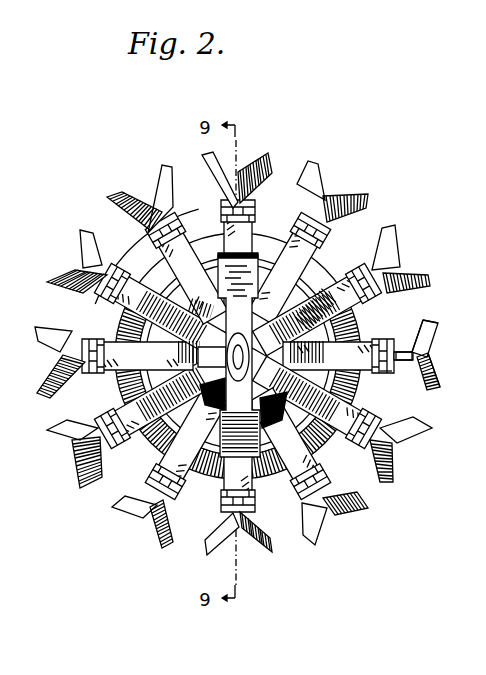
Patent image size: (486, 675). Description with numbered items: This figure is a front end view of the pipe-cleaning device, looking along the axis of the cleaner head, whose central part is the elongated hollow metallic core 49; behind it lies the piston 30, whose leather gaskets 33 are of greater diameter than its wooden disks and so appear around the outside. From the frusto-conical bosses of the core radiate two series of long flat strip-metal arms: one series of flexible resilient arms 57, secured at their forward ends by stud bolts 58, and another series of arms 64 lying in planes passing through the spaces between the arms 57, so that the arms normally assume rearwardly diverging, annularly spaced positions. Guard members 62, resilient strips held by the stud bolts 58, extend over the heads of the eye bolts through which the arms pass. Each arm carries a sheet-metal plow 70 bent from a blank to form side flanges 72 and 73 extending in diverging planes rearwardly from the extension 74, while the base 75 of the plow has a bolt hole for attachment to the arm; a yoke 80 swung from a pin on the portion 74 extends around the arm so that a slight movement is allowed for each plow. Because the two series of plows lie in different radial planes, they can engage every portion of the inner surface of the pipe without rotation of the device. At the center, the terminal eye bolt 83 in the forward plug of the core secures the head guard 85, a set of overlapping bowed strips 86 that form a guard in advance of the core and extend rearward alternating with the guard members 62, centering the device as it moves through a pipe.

The piston 30 is at (217, 478).
The leather gasket 33 is at (213, 242).
The hollow metallic core 49 is at (134, 330).
The flexible resilient arms 57 is at (148, 461).
The stud bolts 58 is at (210, 310).
The guard members 62 is at (239, 392).
The arms 64 is at (246, 233).
The plows 70 is at (236, 355).
The side flange 72 is at (428, 323).
The side flange 73 is at (437, 388).
The extension 74 is at (397, 336).
The base 75 is at (440, 360).
The yoke 80 is at (384, 382).
The terminal eye bolt 83 is at (228, 375).
The head guard 85 is at (212, 348).
The bowed strips 86 is at (238, 356).